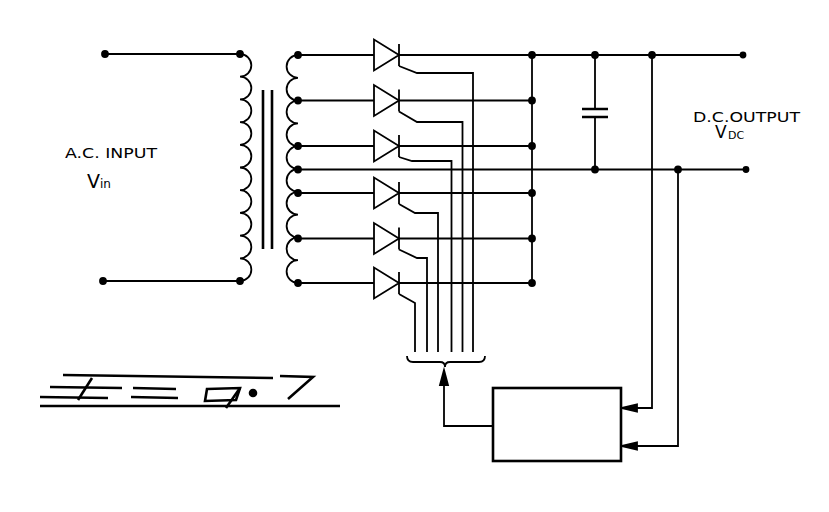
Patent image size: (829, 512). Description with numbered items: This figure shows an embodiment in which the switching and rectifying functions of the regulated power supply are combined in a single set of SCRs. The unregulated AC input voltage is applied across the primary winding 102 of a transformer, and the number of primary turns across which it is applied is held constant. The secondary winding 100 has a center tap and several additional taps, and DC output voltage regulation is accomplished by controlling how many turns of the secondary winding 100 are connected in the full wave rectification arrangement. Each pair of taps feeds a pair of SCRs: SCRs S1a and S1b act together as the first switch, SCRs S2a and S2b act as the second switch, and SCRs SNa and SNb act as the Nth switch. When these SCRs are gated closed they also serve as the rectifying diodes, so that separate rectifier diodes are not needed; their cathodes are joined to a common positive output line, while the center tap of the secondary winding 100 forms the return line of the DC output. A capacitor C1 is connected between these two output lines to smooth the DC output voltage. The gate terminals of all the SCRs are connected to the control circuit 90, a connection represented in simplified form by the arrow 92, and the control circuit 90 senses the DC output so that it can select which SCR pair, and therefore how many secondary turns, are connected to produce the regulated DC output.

The secondary winding 100 is at (292, 57).
The primary winding 102 is at (239, 93).
The control circuit 90 is at (580, 374).
The arrow representing gate connections 92 is at (442, 392).
The capacitor C1 is at (600, 107).
The SCR SNa is at (373, 41).
The SCR S2a is at (373, 92).
The SCR S1a is at (373, 136).
The SCR S1b is at (373, 204).
The SCR S2b is at (373, 250).
The SCR SNb is at (373, 295).